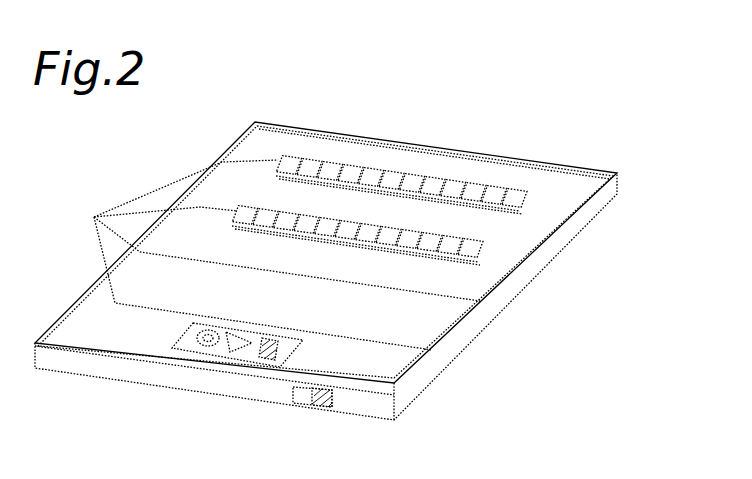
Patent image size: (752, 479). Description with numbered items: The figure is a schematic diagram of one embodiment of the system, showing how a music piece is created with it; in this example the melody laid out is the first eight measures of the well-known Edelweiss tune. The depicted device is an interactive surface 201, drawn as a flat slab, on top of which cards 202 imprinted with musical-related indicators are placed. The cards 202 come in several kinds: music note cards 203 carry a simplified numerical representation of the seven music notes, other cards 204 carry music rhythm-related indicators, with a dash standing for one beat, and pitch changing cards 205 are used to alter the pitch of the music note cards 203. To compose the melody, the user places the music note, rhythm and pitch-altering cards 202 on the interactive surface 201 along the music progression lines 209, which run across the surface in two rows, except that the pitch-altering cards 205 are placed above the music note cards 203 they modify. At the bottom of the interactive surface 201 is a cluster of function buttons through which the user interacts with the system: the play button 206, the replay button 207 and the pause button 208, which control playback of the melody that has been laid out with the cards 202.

The interactive surface 201 is at (624, 180).
The cards 202 is at (455, 250).
The music note cards 203 is at (285, 158).
The music rhythm cards 204 is at (272, 207).
The pitch changing cards 205 is at (318, 228).
The play button 206 is at (232, 348).
The replay button 207 is at (200, 343).
The pause button 208 is at (273, 366).
The music progression lines 209 is at (272, 255).